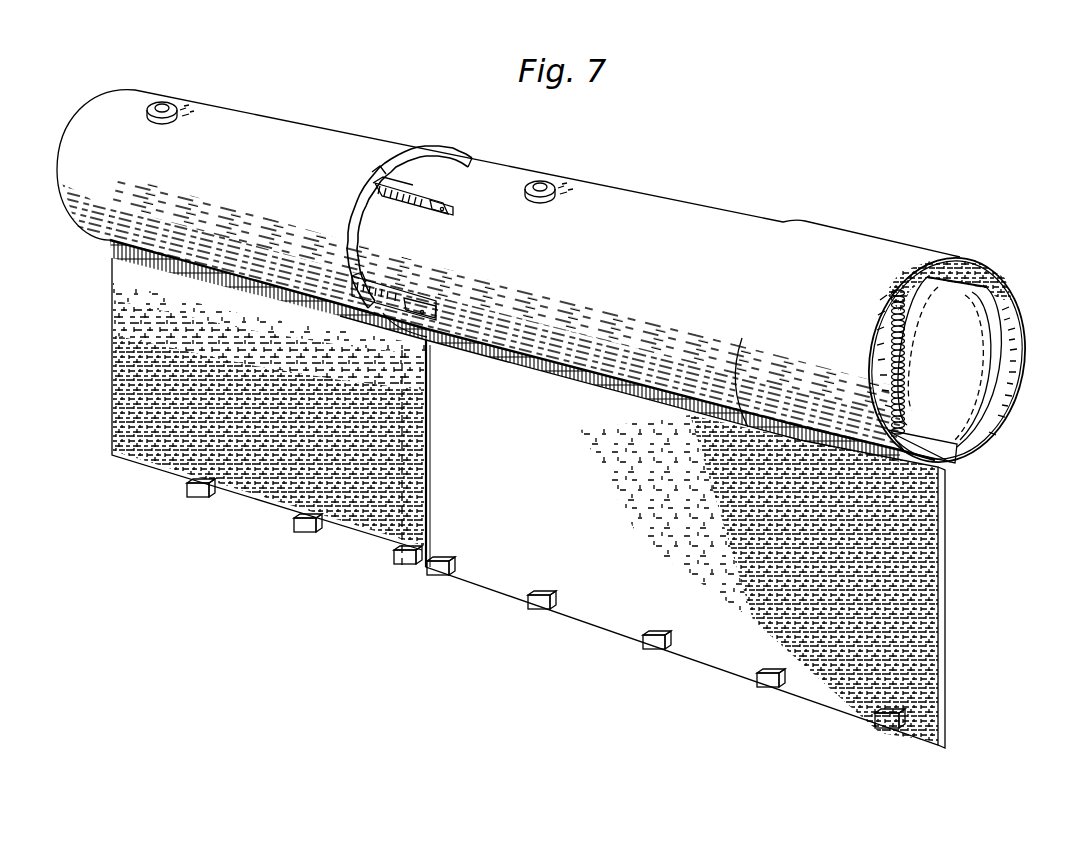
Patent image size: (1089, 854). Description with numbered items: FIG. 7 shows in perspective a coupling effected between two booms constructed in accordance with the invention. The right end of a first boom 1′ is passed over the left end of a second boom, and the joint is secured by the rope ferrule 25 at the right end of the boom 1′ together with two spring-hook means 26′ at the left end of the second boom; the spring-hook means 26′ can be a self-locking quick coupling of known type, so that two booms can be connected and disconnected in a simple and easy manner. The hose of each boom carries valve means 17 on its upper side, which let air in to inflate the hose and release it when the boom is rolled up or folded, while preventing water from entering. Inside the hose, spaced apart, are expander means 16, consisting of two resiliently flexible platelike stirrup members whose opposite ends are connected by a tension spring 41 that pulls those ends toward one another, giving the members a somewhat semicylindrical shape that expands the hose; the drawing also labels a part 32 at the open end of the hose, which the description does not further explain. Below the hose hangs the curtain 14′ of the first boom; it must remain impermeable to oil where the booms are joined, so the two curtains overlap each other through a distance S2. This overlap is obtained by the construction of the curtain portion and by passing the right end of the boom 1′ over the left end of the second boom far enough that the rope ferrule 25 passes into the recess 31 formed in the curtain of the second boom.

The boom 1′ is at (334, 129).
The valve means 17 is at (176, 102).
The rope ferrule 25 is at (367, 203).
The spring-hook means 26′ is at (428, 204).
The tension spring 41 is at (891, 340).
The liner 32 is at (1002, 347).
The expander means 16 is at (924, 443).
The recess 31 is at (420, 342).
The curtain 14′ is at (253, 517).
The overlap distance S2 is at (360, 428).